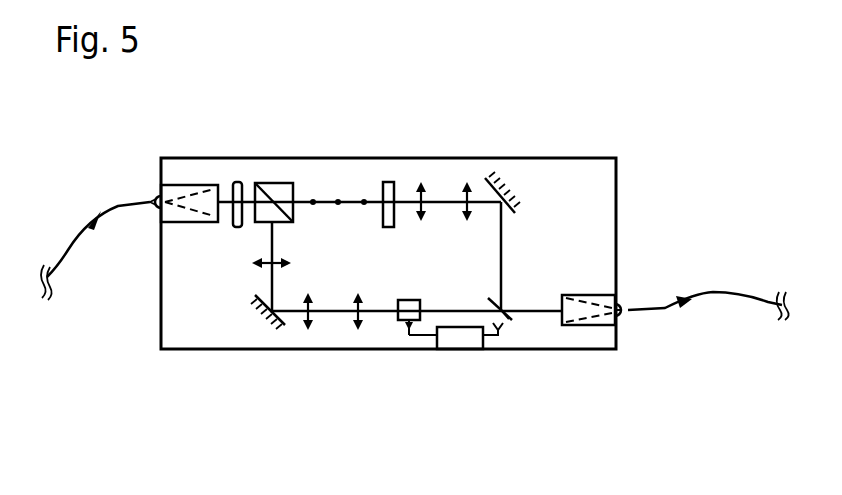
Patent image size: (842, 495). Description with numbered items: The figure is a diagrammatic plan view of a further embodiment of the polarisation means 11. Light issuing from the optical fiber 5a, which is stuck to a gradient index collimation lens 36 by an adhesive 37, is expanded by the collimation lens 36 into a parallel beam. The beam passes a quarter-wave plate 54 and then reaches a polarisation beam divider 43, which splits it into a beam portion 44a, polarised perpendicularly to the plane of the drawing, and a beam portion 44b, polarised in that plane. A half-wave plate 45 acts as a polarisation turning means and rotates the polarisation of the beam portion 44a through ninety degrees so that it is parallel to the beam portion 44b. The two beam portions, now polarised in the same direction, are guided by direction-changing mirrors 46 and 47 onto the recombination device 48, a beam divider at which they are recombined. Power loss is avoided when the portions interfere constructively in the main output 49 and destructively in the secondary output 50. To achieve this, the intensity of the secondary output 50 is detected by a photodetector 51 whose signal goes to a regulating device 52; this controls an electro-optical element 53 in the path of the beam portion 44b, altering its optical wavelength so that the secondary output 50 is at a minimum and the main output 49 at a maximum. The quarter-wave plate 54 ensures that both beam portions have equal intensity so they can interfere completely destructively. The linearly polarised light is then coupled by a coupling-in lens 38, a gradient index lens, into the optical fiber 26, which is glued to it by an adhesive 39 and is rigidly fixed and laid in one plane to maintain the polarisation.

The polarisation means 11 is at (216, 360).
The optical fiber 5a is at (63, 255).
The adhesive 37 is at (148, 196).
The collimation lens 36 is at (187, 186).
The quarter-wave plate 54 is at (238, 183).
The polarisation beam divider 43 is at (275, 184).
The beam portion 44a is at (325, 198).
The beam portion 44b is at (266, 250).
The half-wave plate 45 is at (390, 183).
The direction-changing mirror 47 is at (500, 178).
The direction-changing mirror 46 is at (277, 330).
The recombination device 48 is at (504, 305).
The main output 49 is at (540, 312).
The secondary output 50 is at (509, 320).
The photodetector 51 is at (503, 336).
The regulating device 52 is at (452, 340).
The electro-optical element 53 is at (398, 316).
The adhesive 39 is at (628, 304).
The coupling-in lens 38 is at (602, 332).
The optical fiber 26 is at (718, 293).